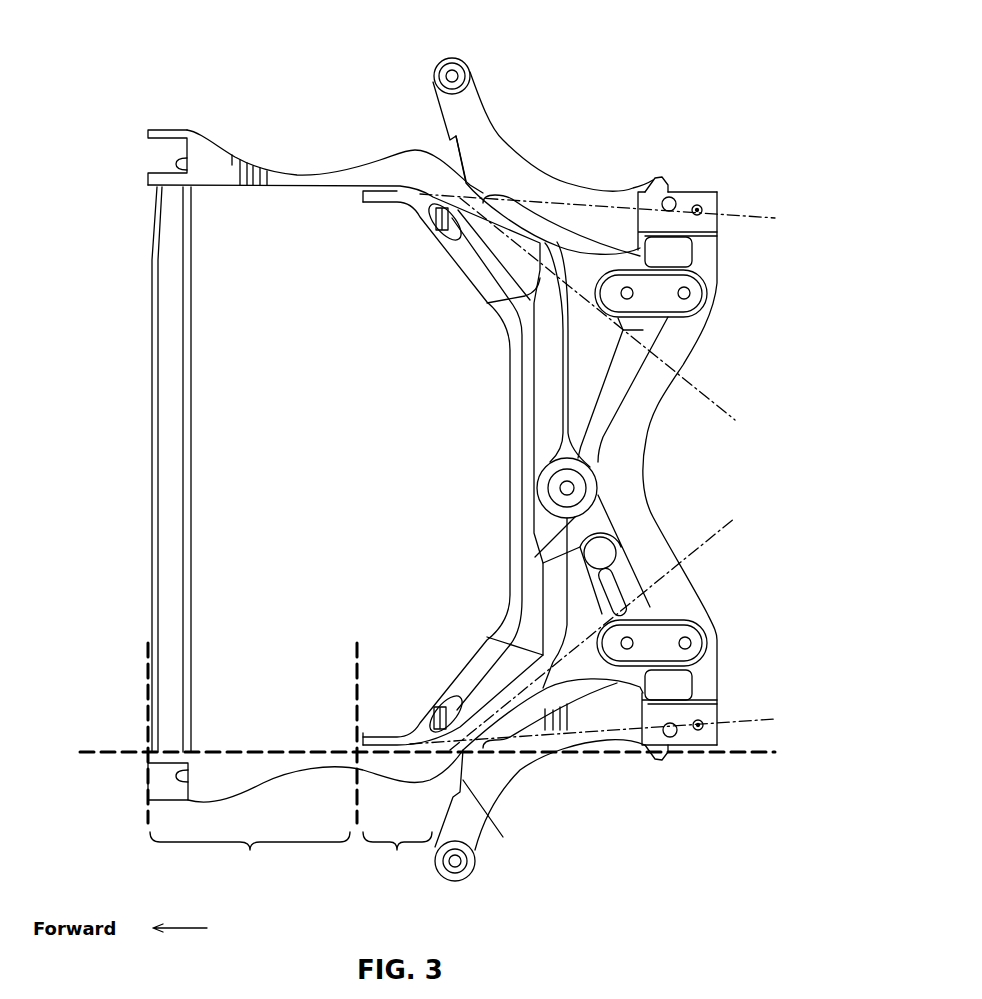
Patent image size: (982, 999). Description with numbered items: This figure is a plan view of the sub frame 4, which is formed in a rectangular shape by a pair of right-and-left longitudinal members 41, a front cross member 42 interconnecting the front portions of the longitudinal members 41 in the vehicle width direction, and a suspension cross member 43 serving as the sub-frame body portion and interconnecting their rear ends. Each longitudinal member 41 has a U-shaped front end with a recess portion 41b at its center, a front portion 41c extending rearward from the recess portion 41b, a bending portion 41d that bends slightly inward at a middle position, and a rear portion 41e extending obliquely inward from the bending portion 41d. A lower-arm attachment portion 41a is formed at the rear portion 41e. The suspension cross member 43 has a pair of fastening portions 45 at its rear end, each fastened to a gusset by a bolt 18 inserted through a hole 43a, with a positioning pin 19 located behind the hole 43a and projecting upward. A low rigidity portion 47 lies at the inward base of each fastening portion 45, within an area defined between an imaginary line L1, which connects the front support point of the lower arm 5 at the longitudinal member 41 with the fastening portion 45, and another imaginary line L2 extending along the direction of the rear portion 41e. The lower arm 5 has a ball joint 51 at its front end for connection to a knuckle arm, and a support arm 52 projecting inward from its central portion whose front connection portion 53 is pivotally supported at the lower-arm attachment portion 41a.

The sub frame 4 is at (348, 115).
The lower arm 5 is at (507, 142).
The bolt 18 is at (670, 196).
The positioning pin 19 is at (703, 206).
The longitudinal member 41 is at (287, 187).
The lower-arm attachment portion 41a is at (455, 245).
The recess portion 41b is at (187, 167).
The front portion 41c is at (250, 852).
The bending portion 41d is at (397, 852).
The rear portion 41e is at (402, 647).
The front cross member 42 is at (173, 515).
The suspension cross member 43 is at (515, 470).
The hole 43a is at (672, 196).
The fastening portion 45 is at (657, 202).
The low rigidity portion 47 is at (642, 256).
The ball joint 51 is at (462, 70).
The support arm 52 is at (463, 153).
The front connection portion 53 is at (437, 222).
The imaginary line L1 is at (757, 214).
The imaginary line L2 is at (717, 404).